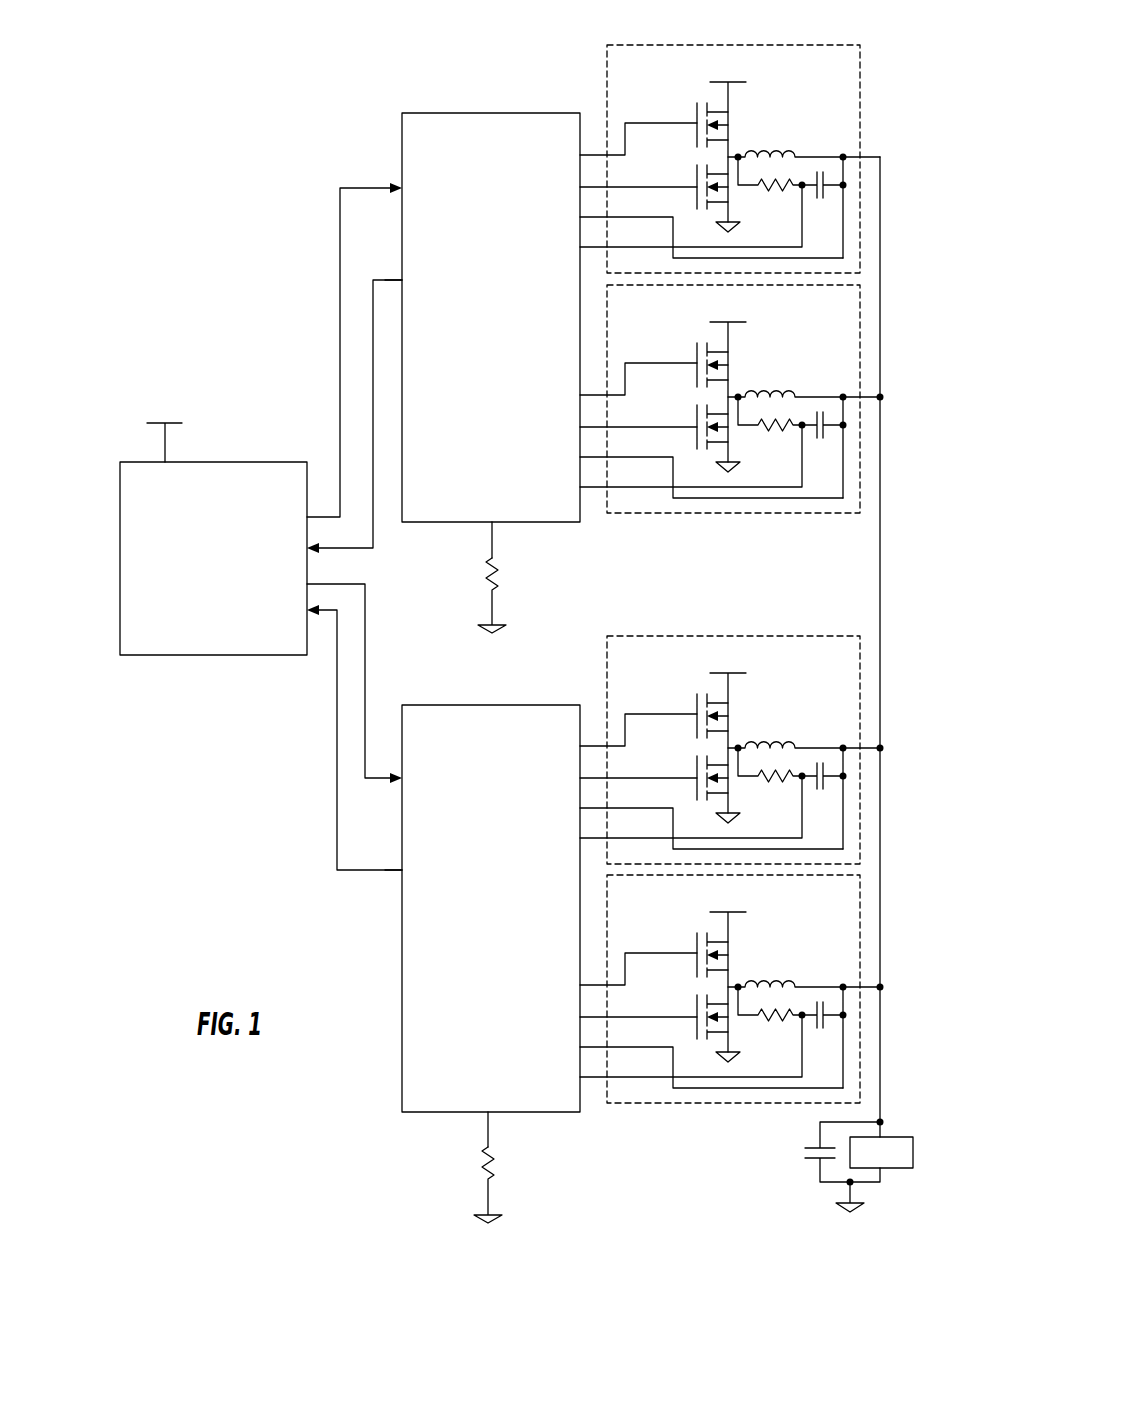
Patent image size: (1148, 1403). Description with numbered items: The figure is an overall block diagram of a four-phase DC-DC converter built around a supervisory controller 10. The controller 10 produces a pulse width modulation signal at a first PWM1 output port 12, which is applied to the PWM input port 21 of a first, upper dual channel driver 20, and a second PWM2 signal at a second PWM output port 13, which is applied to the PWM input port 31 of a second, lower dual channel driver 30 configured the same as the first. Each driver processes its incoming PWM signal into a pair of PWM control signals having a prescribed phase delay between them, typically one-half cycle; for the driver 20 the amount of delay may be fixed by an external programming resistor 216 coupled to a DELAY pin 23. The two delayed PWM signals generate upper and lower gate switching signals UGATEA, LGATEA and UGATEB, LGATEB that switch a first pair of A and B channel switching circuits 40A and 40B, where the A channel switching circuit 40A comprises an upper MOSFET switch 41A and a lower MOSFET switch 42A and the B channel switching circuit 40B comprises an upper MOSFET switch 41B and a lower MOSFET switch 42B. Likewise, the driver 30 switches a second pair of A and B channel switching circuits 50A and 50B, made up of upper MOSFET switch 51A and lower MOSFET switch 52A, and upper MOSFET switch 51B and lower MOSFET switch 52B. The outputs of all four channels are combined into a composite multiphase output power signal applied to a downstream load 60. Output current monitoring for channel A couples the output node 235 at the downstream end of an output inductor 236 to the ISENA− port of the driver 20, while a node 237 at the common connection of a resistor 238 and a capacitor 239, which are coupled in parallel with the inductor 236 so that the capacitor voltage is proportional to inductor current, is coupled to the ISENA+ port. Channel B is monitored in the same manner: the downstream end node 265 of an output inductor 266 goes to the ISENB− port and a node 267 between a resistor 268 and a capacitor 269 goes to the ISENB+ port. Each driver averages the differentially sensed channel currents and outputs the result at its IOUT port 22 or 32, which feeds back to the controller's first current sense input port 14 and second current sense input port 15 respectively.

The supervisory controller 10 is at (120, 497).
The first PWM1 output port 12 is at (307, 517).
The second PWM output port 13 is at (307, 584).
The first current sense input port 14 is at (312, 548).
The second current sense input port 15 is at (307, 620).
The first dual channel driver 20 is at (469, 311).
The PWM input port 21 is at (402, 185).
The IOUT port 22 is at (402, 278).
The DELAY pin 23 is at (492, 525).
The external programming resistor 216 is at (497, 575).
The second dual channel driver 30 is at (467, 904).
The PWM input port 31 is at (402, 775).
The IOUT port 32 is at (402, 873).
The A channel switching circuit 40A is at (743, 136).
The B channel switching circuit 40B is at (750, 422).
The upper MOSFET switch 41A is at (758, 118).
The lower MOSFET switch 42A is at (697, 178).
The upper MOSFET switch 41B is at (682, 353).
The lower MOSFET switch 42B is at (686, 416).
The output node 235 is at (843, 157).
The output inductor 236 is at (775, 148).
The node 237 is at (802, 190).
The resistor 238 is at (770, 190).
The capacitor 239 is at (819, 202).
The downstream end node 265 is at (880, 415).
The output inductor 266 is at (785, 362).
The node 267 is at (821, 388).
The resistor 268 is at (770, 433).
The capacitor 269 is at (822, 454).
The A channel switching circuit 50A is at (730, 727).
The B channel switching circuit 50B is at (730, 1016).
The upper MOSFET switch 51A is at (684, 696).
The lower MOSFET switch 52A is at (686, 765).
The upper MOSFET switch 51B is at (689, 941).
The lower MOSFET switch 52B is at (685, 1004).
The load 60 is at (897, 1137).